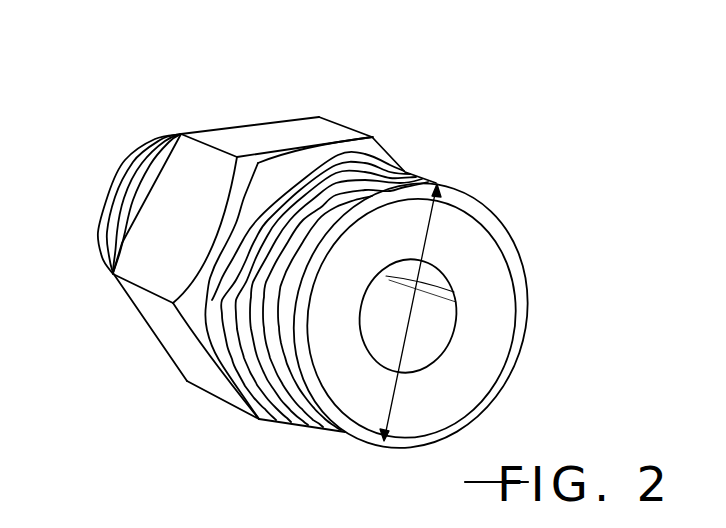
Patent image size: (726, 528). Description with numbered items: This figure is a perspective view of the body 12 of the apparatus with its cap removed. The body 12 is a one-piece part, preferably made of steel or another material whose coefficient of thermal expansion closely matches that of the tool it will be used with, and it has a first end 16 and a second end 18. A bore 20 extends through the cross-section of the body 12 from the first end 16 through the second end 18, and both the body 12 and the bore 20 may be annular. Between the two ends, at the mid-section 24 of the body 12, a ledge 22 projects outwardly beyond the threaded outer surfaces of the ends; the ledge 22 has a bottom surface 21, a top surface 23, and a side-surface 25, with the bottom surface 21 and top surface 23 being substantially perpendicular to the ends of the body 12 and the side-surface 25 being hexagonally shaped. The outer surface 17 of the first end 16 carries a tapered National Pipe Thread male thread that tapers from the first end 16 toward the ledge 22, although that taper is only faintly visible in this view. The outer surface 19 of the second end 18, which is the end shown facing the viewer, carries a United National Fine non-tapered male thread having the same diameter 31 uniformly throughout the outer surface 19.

The body 12 is at (437, 153).
The first end 16 is at (134, 147).
The outer surface of the first end 17 is at (113, 197).
The second end 18 is at (442, 403).
The outer surface of the second end 19 is at (280, 393).
The bore 20 is at (427, 332).
The bottom surface 21 is at (217, 123).
The ledge 22 is at (208, 380).
The top surface 23 is at (283, 150).
The mid-section 24 is at (155, 329).
The side-surface 25 is at (269, 133).
The diameter 31 is at (417, 297).